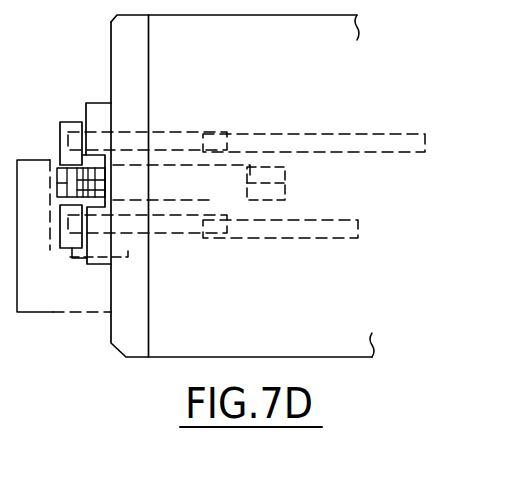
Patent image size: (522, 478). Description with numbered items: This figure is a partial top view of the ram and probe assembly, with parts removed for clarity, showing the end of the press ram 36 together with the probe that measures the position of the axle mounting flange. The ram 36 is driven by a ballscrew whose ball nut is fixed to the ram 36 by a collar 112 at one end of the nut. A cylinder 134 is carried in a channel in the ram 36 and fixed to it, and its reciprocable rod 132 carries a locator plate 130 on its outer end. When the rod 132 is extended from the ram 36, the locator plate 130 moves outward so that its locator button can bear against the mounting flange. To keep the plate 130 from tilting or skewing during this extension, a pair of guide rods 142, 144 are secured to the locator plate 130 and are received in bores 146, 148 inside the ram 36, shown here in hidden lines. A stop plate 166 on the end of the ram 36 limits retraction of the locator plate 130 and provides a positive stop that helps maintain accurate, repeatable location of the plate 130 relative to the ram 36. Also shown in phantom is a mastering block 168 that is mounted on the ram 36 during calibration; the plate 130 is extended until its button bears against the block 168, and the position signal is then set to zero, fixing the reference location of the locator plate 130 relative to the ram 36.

The ram 36 is at (332, 53).
The collar 112 is at (141, 59).
The locator plate 130 is at (68, 122).
The reciprocable rod 132 is at (88, 184).
The cylinder 134 is at (248, 186).
The guide rod 142 is at (178, 128).
The guide rod 144 is at (190, 236).
The bore 146 is at (340, 138).
The bore 148 is at (347, 239).
The stop plate 166 is at (95, 106).
The mastering block 168 is at (50, 310).